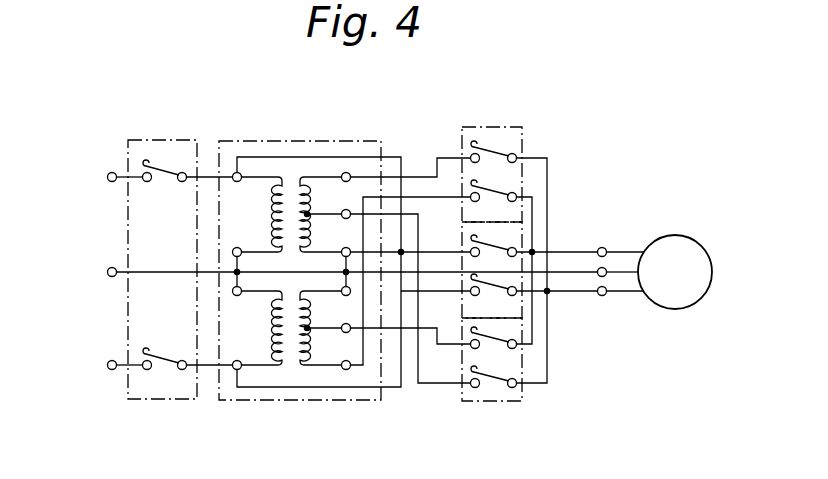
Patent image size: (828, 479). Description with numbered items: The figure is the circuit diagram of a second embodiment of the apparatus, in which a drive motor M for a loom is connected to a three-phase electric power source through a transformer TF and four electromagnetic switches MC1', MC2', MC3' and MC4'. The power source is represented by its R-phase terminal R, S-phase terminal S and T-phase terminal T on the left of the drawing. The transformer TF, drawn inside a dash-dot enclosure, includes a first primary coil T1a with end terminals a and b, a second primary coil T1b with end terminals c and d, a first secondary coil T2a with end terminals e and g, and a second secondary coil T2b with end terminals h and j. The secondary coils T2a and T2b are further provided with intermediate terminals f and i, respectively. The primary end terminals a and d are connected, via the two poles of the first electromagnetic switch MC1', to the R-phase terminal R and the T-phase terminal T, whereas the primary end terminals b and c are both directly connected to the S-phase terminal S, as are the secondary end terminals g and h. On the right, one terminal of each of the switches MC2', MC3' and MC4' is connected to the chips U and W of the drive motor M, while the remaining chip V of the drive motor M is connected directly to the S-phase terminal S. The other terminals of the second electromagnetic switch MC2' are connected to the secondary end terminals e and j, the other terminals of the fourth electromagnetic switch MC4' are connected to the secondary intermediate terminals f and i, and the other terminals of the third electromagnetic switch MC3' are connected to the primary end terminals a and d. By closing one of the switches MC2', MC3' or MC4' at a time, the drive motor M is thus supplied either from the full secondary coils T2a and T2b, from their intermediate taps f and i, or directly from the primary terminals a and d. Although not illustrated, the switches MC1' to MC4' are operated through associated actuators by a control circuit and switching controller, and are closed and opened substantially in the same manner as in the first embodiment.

The first electromagnetic switch MC1' is at (162, 243).
The second electromagnetic switch MC2' is at (517, 156).
The third electromagnetic switch MC3' is at (540, 254).
The fourth electromagnetic switch MC4' is at (519, 386).
The transformer TF is at (294, 403).
The first primary coil T1a is at (275, 191).
The first secondary coil T2a is at (308, 198).
The second primary coil T1b is at (272, 338).
The second secondary coil T2b is at (307, 347).
The drive motor M is at (675, 272).
The R-phase terminal R is at (97, 177).
The S-phase terminal S is at (97, 272).
The T-phase terminal T is at (96, 365).
The chip U of the drive motor U is at (609, 244).
The chip V of the drive motor V is at (610, 264).
The chip W of the drive motor W is at (611, 284).
The primary end terminal a is at (235, 187).
The primary end terminal b is at (236, 241).
The primary end terminal c is at (236, 302).
The primary end terminal d is at (236, 353).
The secondary end terminal e is at (351, 169).
The secondary intermediate terminal f is at (341, 206).
The secondary end terminal g is at (339, 241).
The secondary end terminal h is at (352, 301).
The secondary intermediate terminal i is at (342, 338).
The secondary end terminal j is at (349, 369).